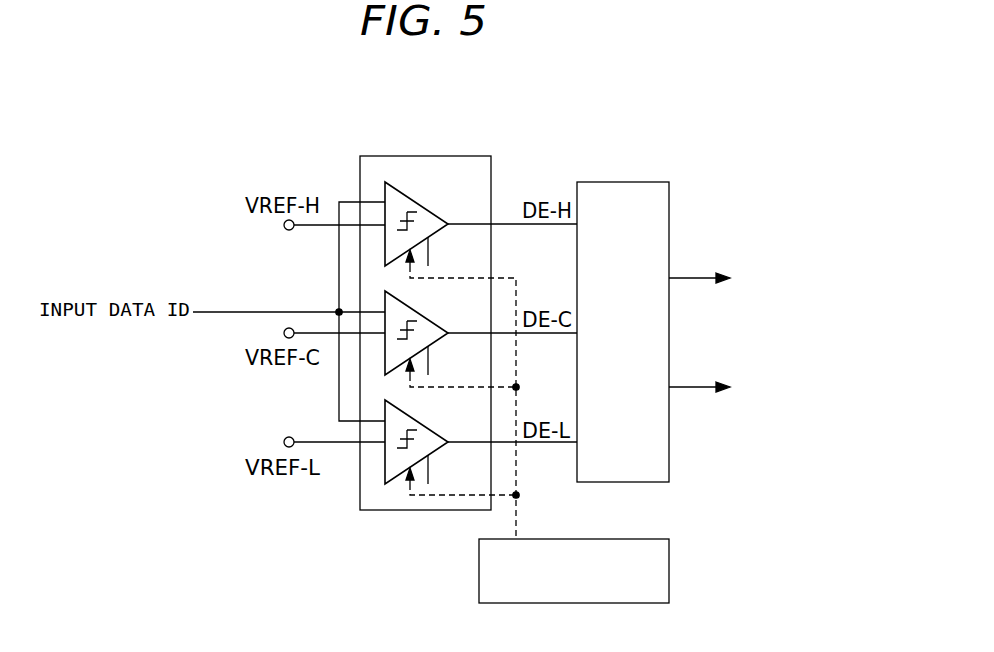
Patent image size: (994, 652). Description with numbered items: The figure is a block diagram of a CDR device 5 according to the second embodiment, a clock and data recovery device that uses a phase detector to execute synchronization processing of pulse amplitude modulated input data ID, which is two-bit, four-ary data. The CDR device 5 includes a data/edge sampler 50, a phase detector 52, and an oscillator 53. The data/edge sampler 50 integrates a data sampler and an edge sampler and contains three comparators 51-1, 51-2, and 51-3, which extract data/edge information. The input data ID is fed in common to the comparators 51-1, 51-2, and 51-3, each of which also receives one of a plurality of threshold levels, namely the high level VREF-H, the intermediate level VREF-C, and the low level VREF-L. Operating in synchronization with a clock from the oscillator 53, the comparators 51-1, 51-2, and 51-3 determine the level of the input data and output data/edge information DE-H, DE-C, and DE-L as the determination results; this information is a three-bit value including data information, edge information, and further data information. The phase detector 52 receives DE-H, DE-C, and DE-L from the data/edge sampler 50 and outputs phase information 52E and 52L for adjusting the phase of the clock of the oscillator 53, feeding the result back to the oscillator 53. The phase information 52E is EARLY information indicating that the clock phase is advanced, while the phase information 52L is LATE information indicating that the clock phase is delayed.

The CDR device 5 is at (398, 138).
The data/edge sampler 50 is at (445, 156).
The comparator 51-1 is at (423, 206).
The comparator 51-2 is at (423, 315).
The comparator 51-3 is at (423, 423).
The phase detector 52 is at (669, 330).
The phase information 52E is at (721, 280).
The phase information 52L is at (722, 389).
The oscillator 53 is at (669, 566).